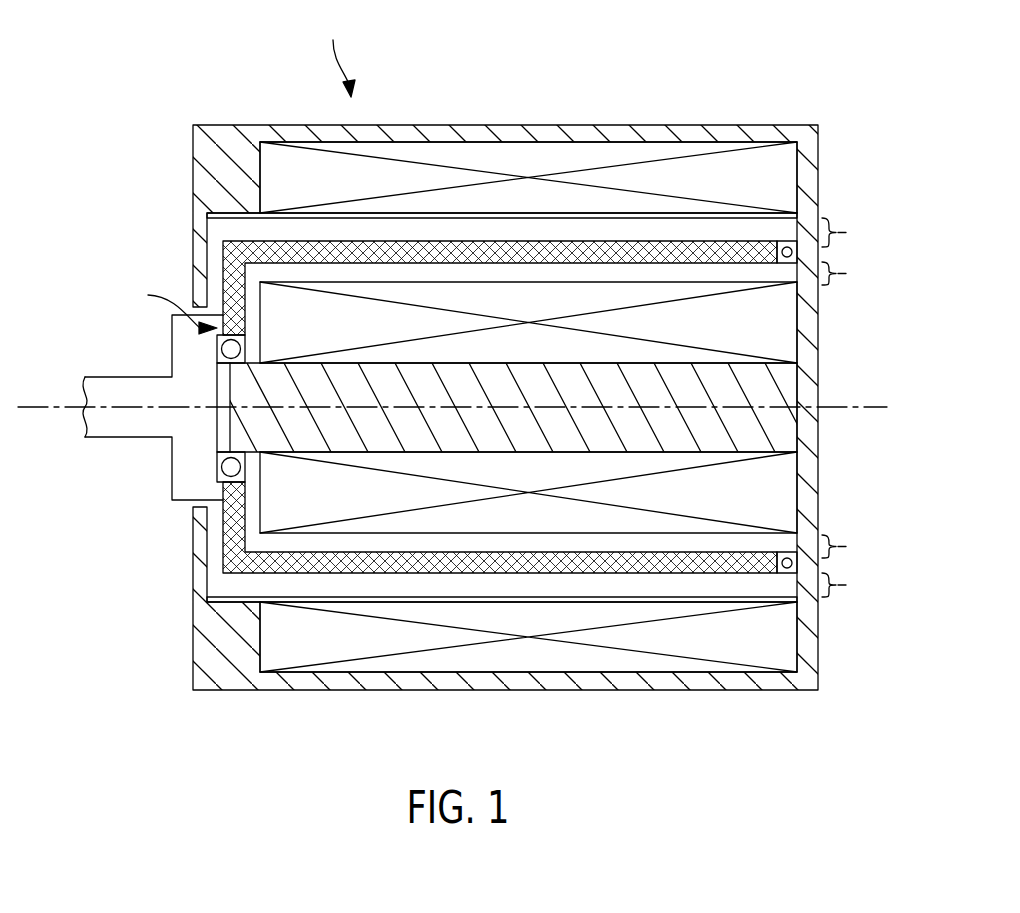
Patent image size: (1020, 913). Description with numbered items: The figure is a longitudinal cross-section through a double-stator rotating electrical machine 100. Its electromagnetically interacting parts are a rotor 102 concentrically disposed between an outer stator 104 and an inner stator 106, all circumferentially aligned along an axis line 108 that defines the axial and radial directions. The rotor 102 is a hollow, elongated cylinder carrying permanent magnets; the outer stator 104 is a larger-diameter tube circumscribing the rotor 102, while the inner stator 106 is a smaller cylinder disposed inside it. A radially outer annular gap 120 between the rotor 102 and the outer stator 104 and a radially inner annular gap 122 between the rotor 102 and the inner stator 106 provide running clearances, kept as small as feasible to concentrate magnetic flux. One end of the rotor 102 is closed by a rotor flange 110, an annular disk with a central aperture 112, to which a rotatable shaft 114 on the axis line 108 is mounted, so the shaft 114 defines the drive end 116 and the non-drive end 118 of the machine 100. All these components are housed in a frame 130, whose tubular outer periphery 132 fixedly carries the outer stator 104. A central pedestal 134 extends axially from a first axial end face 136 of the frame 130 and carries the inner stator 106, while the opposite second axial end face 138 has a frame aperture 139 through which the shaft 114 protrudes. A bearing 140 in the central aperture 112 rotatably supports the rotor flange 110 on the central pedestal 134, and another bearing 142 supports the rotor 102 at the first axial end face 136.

The rotating electrical machine 100 is at (337, 52).
The rotor 102 is at (758, 242).
The outer stator 104 is at (570, 150).
The inner stator 106 is at (785, 303).
The axis line 108 is at (48, 412).
The rotor flange 110 is at (230, 282).
The central aperture 112 is at (167, 307).
The shaft 114 is at (97, 377).
The drive end 116 is at (85, 203).
The non-drive end 118 is at (907, 222).
The radially outer annular gap 120 is at (849, 408).
The radially inner annular gap 122 is at (849, 408).
The frame 130 is at (205, 157).
The tubular outer periphery 132 is at (425, 125).
The central pedestal 134 is at (792, 389).
The first axial end face 136 is at (820, 476).
The second axial end face 138 is at (193, 557).
The frame aperture 139 is at (190, 507).
The bearing 140 is at (222, 465).
The bearing 142 is at (788, 244).